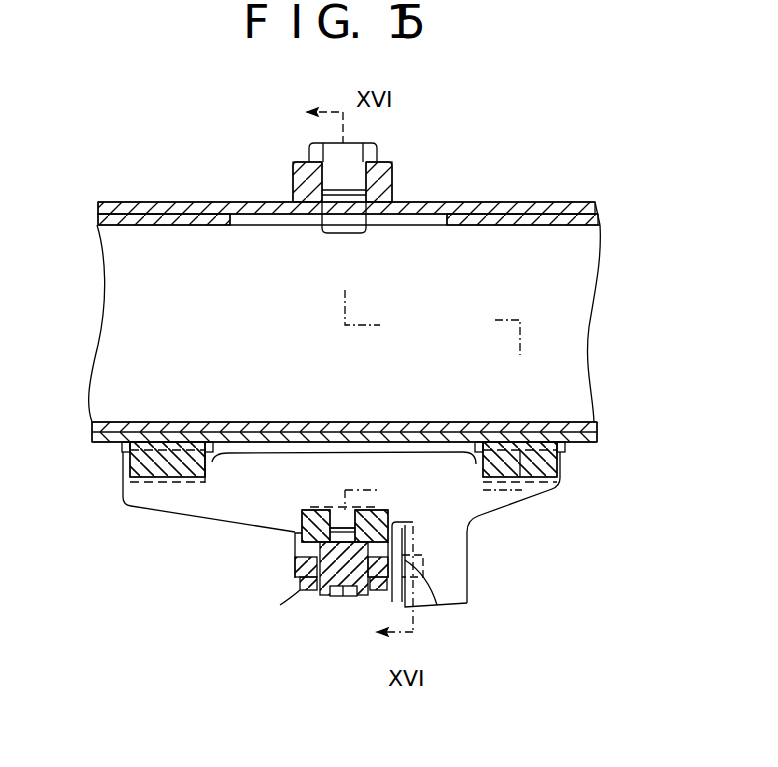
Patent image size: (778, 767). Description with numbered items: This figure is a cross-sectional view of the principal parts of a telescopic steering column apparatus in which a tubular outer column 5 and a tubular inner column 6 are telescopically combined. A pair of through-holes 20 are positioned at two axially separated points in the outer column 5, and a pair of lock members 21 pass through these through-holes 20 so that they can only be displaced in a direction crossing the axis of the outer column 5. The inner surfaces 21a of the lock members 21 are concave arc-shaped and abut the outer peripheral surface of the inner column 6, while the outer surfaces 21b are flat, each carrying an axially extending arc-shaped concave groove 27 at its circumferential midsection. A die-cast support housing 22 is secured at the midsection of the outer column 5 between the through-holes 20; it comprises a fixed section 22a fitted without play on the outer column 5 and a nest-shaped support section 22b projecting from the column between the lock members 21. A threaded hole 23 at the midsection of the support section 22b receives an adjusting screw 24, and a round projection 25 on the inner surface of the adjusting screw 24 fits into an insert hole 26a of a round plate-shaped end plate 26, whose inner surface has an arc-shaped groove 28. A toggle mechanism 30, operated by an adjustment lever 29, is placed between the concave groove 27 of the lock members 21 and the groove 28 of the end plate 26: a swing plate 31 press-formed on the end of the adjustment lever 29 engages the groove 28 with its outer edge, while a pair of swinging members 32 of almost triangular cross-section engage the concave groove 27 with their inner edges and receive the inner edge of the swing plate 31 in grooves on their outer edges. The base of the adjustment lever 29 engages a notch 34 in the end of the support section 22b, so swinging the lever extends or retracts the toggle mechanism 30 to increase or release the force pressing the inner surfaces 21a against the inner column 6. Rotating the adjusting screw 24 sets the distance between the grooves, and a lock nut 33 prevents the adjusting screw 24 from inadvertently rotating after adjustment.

The outer column 5 is at (508, 202).
The inner column 6 is at (598, 218).
The through-holes 20 is at (123, 450).
The lock members 21 is at (148, 446).
The inner surfaces 21a is at (178, 446).
The outer surfaces 21b is at (210, 468).
The support housing 22 is at (392, 183).
The fixed section 22a is at (379, 172).
The support section 22b is at (298, 560).
The threaded hole 23 is at (328, 590).
The adjusting screw 24 is at (350, 597).
The round projection 25 is at (332, 510).
The end plate 26 is at (388, 510).
The insert hole 26a is at (396, 537).
The concave groove 27 is at (173, 453).
The arc-shaped groove 28 is at (302, 510).
The adjustment lever 29 is at (460, 579).
The toggle mechanism 30 is at (263, 538).
The swing plate 31 is at (435, 463).
The swinging members 32 is at (135, 478).
The lock nut 33 is at (303, 588).
The notch 34 is at (420, 583).